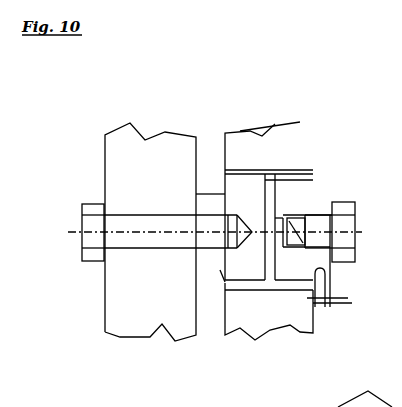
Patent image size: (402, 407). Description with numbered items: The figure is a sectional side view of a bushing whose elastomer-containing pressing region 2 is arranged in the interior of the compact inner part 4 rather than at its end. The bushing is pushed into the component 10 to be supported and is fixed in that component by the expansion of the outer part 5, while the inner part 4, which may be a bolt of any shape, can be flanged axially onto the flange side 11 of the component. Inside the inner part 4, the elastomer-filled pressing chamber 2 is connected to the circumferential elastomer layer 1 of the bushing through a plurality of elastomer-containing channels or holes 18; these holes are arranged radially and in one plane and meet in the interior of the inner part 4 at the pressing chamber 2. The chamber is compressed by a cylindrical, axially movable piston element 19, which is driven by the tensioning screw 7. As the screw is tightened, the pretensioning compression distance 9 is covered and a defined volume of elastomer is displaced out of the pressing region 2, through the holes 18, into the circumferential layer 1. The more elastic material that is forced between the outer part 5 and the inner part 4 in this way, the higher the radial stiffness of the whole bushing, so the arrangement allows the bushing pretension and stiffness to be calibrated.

The flange side 11 is at (148, 182).
The compact inner part 4 is at (226, 195).
The component to be supported 10 is at (272, 150).
The circumferential elastomer layer 1 is at (266, 193).
The elastomer-containing channels or holes 18 is at (288, 182).
The elastomer-containing pressing region 2 is at (290, 215).
The piston element 19 is at (302, 240).
The tensioning screw 7 is at (355, 205).
The pretensioning compression distance 9 is at (327, 303).
The outer part 5 is at (275, 290).